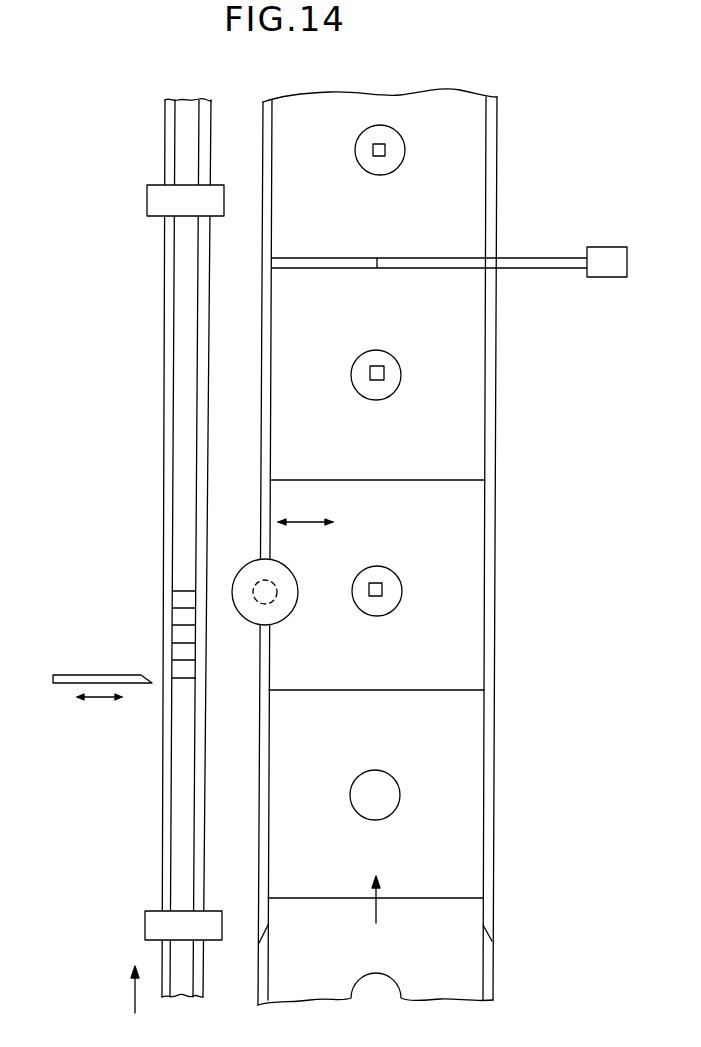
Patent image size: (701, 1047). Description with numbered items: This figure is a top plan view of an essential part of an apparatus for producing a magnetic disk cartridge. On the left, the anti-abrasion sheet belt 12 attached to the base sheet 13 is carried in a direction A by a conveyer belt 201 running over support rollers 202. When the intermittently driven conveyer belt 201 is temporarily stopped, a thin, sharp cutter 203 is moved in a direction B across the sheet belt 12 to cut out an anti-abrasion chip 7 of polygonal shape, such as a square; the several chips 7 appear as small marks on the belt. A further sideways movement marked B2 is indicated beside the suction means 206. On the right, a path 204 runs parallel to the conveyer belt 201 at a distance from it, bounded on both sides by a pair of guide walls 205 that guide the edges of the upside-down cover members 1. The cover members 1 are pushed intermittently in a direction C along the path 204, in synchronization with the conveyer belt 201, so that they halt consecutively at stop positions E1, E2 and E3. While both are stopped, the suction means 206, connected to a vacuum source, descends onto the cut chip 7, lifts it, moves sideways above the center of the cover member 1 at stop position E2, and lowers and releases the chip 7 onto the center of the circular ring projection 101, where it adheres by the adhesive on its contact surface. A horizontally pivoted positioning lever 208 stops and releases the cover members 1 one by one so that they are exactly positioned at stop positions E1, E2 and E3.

The cover member 1 is at (287, 445).
The anti-abrasion chip 7 is at (172, 664).
The anti-abrasion sheet belt 12 is at (178, 820).
The base sheet 13 is at (181, 400).
The circular ring projection 101 is at (399, 167).
The conveyer belt 201 is at (163, 905).
The support roller 202 is at (153, 186).
The cutter 203 is at (73, 678).
The path 204 is at (493, 958).
The guide wall 205 is at (490, 718).
The suction means 206 is at (288, 601).
The positioning lever 208 is at (537, 258).
The stop position E1 is at (497, 818).
The stop position E2 is at (497, 575).
The stop position E3 is at (497, 370).
The direction A is at (132, 991).
The direction B is at (103, 697).
The movement direction B2 is at (308, 522).
The direction C is at (378, 912).